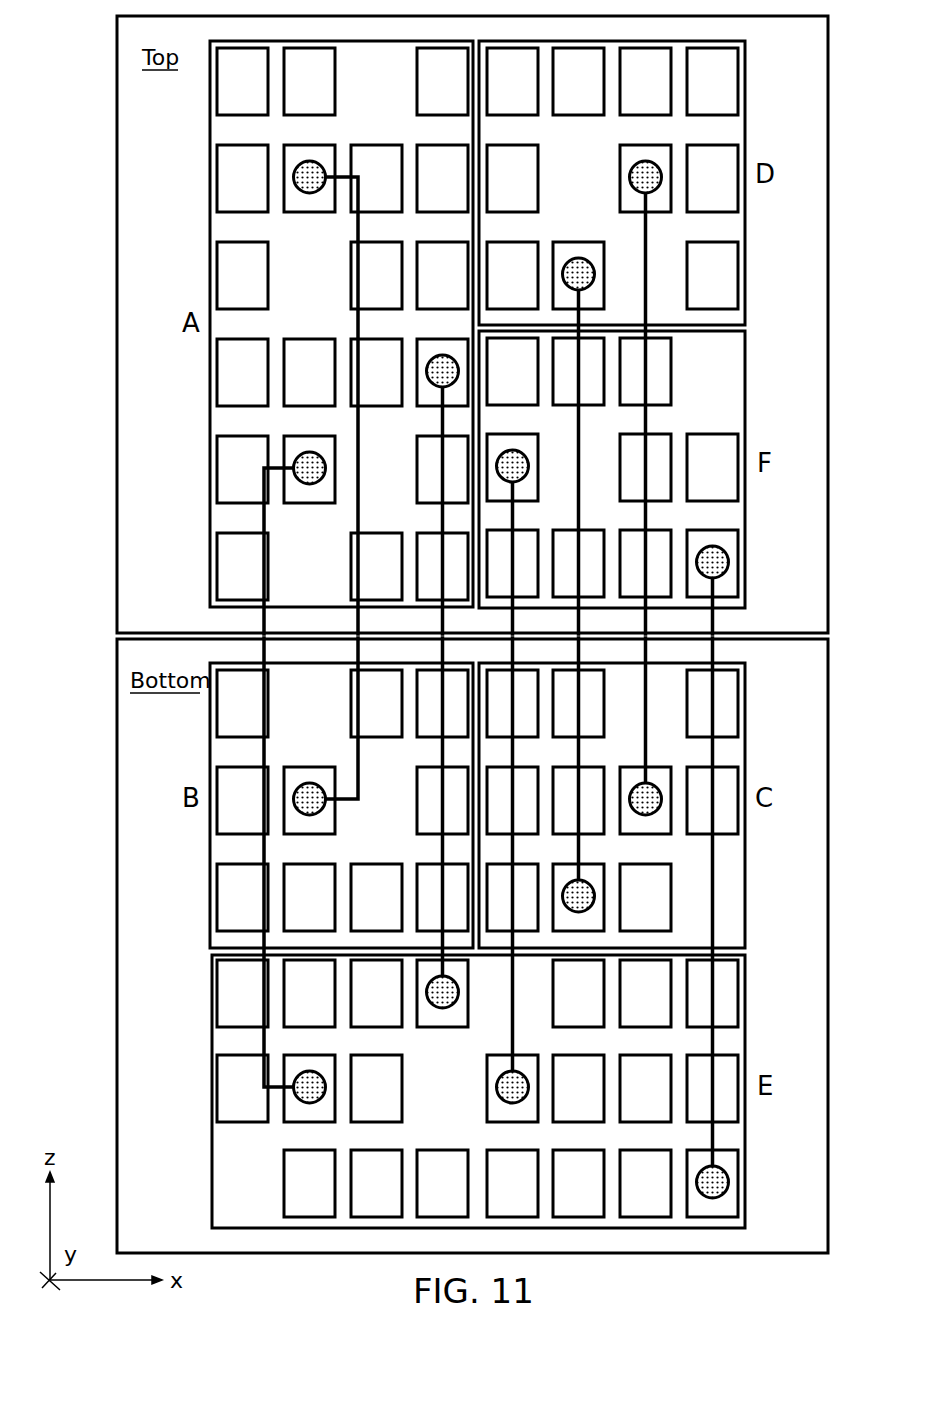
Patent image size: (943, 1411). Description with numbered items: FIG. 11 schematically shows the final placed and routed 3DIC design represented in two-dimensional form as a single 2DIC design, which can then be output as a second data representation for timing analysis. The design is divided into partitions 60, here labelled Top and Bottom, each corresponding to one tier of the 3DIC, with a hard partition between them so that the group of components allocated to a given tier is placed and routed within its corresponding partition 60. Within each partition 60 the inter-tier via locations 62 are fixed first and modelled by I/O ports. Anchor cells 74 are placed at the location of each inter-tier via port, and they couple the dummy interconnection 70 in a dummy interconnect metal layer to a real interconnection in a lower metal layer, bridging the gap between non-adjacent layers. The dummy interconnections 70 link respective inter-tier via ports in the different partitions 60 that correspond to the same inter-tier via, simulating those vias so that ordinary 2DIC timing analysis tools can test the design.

The partition 60 is at (117, 362).
The inter-tier via location 62 is at (311, 195).
The dummy interconnection 70 is at (253, 622).
The anchor cell 74 is at (328, 145).